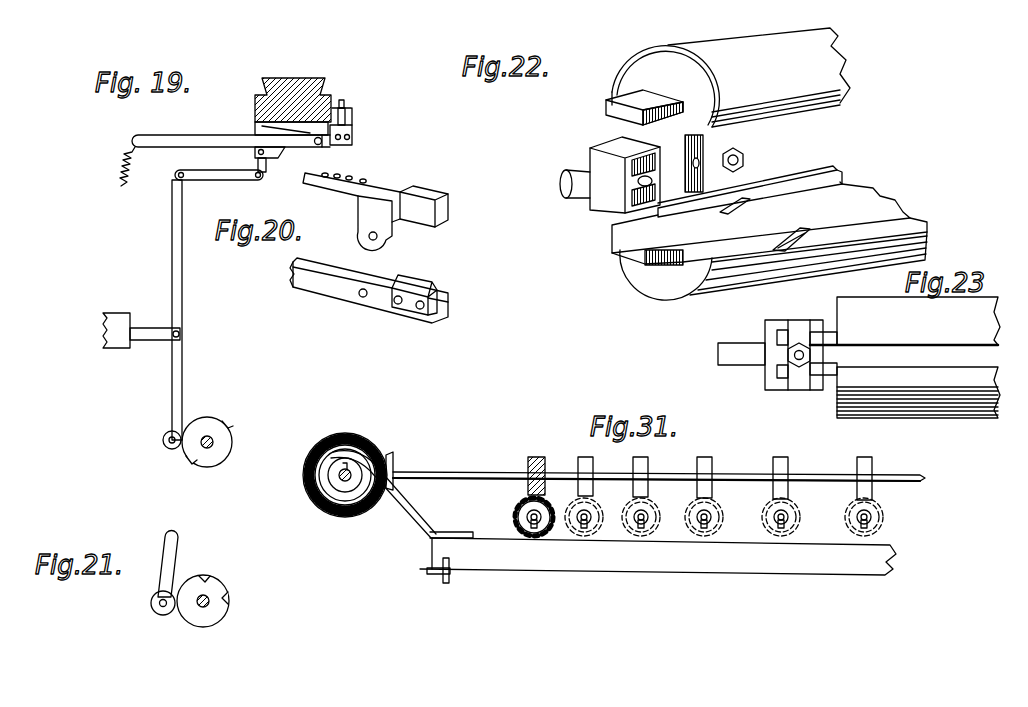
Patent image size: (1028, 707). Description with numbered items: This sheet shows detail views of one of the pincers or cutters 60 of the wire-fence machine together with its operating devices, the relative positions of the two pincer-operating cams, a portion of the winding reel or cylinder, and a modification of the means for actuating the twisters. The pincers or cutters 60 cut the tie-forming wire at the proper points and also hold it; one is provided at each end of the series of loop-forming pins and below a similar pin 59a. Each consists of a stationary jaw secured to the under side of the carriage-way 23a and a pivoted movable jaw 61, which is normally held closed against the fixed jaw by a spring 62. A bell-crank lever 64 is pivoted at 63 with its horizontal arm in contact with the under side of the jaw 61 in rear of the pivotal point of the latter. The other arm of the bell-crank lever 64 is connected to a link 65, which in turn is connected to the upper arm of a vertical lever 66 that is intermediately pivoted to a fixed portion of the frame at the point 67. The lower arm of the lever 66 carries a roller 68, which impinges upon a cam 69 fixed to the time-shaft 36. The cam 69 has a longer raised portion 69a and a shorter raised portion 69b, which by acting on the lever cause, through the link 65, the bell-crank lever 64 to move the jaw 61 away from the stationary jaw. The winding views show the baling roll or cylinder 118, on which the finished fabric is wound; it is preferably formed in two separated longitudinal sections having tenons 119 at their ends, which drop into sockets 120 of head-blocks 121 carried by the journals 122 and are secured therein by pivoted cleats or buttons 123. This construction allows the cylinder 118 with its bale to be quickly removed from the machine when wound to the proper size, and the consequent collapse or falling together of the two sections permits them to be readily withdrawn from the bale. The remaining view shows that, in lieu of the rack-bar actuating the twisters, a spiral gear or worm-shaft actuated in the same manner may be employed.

In FIG. 19, the carriage-way 23a is at (291, 84).
In FIG. 19, the pin 59a is at (346, 108).
In FIG. 19, the pincers or cutters 60 is at (325, 146).
In FIG. 19, the pivoted movable jaw 61 is at (232, 139).
In FIG. 20, the pivoted movable jaw 61 is at (407, 308).
In FIG. 19, the spring 62 is at (124, 186).
In FIG. 19, the pivot 63 is at (263, 166).
In FIG. 19, the bell-crank lever 64 is at (272, 152).
In FIG. 19, the link 65 is at (222, 176).
In FIG. 19, the vertical lever 66 is at (170, 246).
In FIG. 21, the vertical lever 66 is at (172, 563).
In FIG. 19, the pivot point 67 is at (182, 334).
In FIG. 19, the roller 68 is at (168, 448).
In FIG. 21, the roller 68 is at (157, 615).
In FIG. 19, the cam 69 is at (220, 452).
In FIG. 21, the cam 69 is at (202, 618).
In FIG. 19, the longer raised portion 69a is at (212, 416).
In FIG. 21, the longer raised portion 69a is at (198, 576).
In FIG. 19, the shorter raised portion 69b is at (194, 462).
In FIG. 21, the shorter raised portion 69b is at (232, 598).
In FIG. 19, the time-shaft 36 is at (215, 443).
In FIG. 21, the time-shaft 36 is at (209, 605).
In FIG. 22, the baling roll or cylinder 118 is at (769, 164).
In FIG. 23, the baling roll or cylinder 118 is at (905, 357).
In FIG. 22, the tenons 119 is at (648, 103).
In FIG. 23, the tenons 119 is at (827, 368).
In FIG. 22, the sockets 120 is at (628, 152).
In FIG. 23, the sockets 120 is at (778, 343).
In FIG. 22, the head-blocks 121 is at (600, 160).
In FIG. 23, the head-blocks 121 is at (782, 382).
In FIG. 22, the journals 122 is at (580, 190).
In FIG. 23, the journals 122 is at (722, 353).
In FIG. 22, the pivoted cleats or buttons 123 is at (705, 170).
In FIG. 23, the pivoted cleats or buttons 123 is at (799, 355).